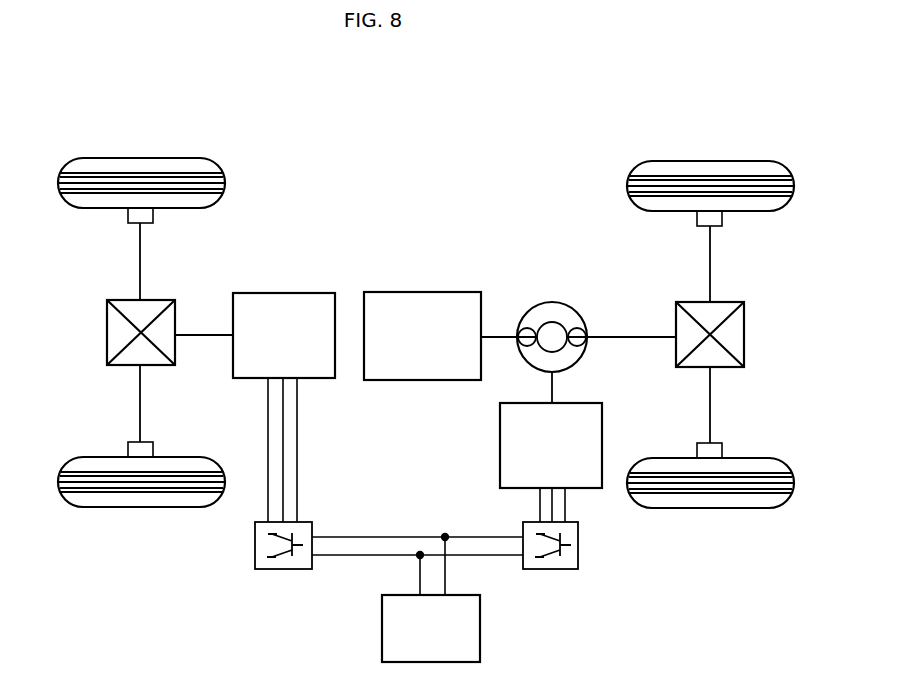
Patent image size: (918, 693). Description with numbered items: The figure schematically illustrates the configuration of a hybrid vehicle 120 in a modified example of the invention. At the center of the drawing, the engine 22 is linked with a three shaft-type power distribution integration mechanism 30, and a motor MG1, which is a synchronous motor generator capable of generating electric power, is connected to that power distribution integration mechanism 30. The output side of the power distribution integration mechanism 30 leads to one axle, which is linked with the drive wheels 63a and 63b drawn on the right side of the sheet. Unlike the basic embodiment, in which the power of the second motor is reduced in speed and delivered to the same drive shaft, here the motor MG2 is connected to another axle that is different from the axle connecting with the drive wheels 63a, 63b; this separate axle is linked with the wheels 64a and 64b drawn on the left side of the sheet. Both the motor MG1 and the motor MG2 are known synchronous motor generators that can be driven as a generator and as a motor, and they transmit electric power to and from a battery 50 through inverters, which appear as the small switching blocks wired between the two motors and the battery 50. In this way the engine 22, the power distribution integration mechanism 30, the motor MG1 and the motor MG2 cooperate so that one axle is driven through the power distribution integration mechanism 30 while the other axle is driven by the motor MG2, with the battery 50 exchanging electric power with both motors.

The hybrid vehicle 120 is at (465, 135).
The engine 22 is at (423, 292).
The power distribution integration mechanism 30 is at (553, 302).
The battery 50 is at (480, 628).
The motor MG1 is at (500, 443).
The motor MG2 is at (283, 292).
The drive wheel 63a is at (710, 161).
The drive wheel 63b is at (710, 508).
The wheel 64a is at (145, 158).
The wheel 64b is at (140, 507).